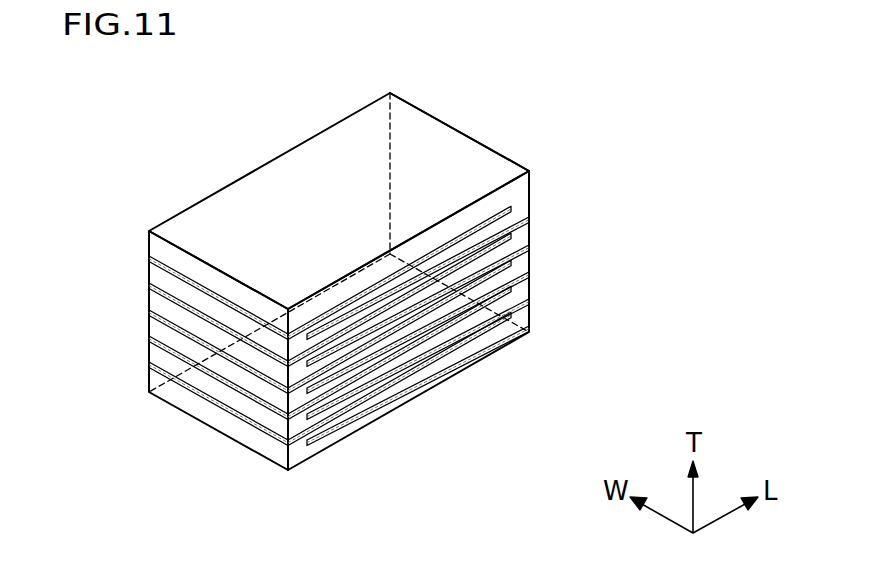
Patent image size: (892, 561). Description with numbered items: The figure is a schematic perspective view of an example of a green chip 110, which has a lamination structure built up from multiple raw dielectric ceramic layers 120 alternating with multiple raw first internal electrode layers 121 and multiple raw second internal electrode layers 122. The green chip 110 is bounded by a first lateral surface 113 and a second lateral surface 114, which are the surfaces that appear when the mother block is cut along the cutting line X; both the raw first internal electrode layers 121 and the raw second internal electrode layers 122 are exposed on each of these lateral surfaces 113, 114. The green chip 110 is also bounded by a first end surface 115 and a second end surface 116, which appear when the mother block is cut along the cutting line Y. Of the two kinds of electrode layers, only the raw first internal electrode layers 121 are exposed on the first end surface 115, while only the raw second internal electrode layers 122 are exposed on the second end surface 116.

The green chip 110 is at (345, 260).
The first lateral surface 113 is at (452, 362).
The second lateral surface 114 is at (259, 198).
The first end surface 115 is at (212, 387).
The second end surface 116 is at (444, 157).
The raw dielectric ceramic layer 120 is at (345, 335).
The raw first internal electrode layer 121 is at (168, 292).
The raw second internal electrode layer 122 is at (522, 247).